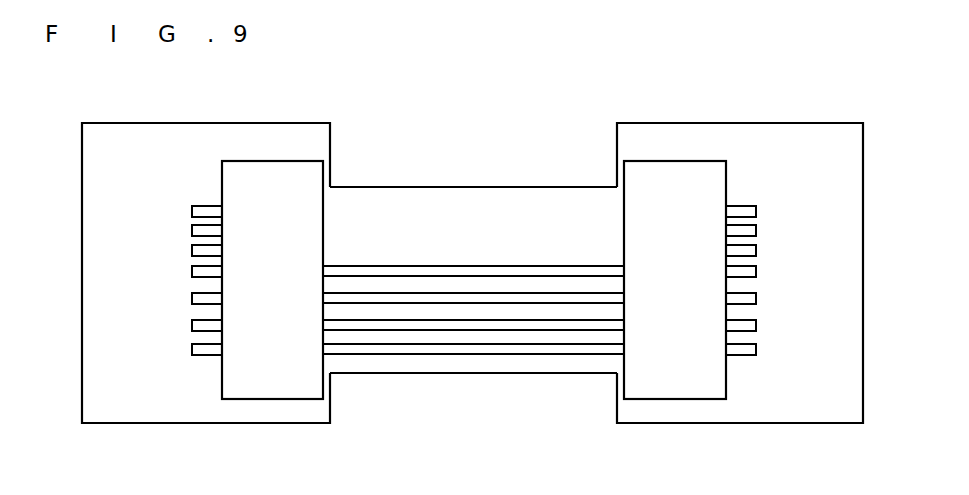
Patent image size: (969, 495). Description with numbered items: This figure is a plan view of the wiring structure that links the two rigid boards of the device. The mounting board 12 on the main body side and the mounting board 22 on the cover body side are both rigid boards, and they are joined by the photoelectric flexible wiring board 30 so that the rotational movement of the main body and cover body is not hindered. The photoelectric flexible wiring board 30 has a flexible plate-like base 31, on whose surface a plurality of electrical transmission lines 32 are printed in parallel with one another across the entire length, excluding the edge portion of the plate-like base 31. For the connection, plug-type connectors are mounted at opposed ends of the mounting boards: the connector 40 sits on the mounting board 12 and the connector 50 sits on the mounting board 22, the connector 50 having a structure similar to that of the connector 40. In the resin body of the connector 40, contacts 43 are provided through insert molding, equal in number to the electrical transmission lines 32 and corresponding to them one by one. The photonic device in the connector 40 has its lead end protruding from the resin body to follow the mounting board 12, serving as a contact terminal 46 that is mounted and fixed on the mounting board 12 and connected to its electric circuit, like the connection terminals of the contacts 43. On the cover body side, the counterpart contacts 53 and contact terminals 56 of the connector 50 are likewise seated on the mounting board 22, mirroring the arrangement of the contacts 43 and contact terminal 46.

The mounting board 12 is at (247, 424).
The mounting board 22 is at (710, 423).
The photoelectric flexible wiring board 30 is at (462, 188).
The plate-like base 31 is at (515, 187).
The electrical transmission lines 32 is at (373, 267).
The connector 40 is at (280, 161).
The contacts 43 is at (192, 325).
The contact terminal 46 is at (192, 231).
The connector 50 is at (665, 161).
The connected pads of second chip 53 is at (750, 355).
The unconnected pads of second chip 56 is at (747, 206).